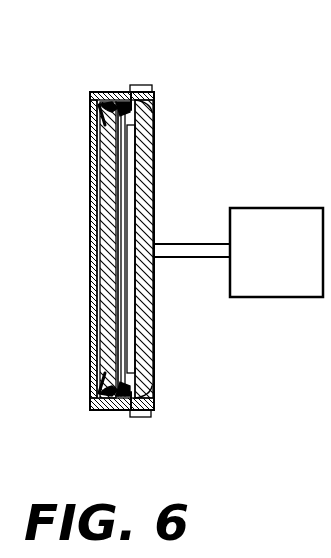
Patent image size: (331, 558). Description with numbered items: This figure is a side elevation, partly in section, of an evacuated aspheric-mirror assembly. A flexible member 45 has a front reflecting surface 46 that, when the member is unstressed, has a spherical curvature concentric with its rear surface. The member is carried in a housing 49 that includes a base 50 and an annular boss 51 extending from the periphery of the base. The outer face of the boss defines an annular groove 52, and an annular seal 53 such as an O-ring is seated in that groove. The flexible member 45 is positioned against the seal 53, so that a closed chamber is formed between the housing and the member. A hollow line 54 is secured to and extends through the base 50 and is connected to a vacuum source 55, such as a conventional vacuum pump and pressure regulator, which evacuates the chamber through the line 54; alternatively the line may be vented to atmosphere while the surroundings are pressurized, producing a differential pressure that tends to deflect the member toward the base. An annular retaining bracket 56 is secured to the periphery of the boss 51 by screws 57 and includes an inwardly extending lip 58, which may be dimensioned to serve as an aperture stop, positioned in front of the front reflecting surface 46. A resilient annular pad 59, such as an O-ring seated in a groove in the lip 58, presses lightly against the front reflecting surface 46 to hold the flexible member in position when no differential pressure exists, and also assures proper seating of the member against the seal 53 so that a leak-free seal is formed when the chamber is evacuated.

The flexible member 45 is at (90, 292).
The front reflecting surface 46 is at (100, 238).
The housing 49 is at (155, 345).
The base 50 is at (155, 160).
The annular boss 51 is at (131, 90).
The annular groove 52 is at (155, 103).
The annular seal 53 is at (110, 96).
The hollow line 54 is at (190, 243).
The vacuum source 55 is at (270, 255).
The annular retaining bracket 56 is at (93, 97).
The screws 57 is at (142, 88).
The inwardly extending lip 58 is at (92, 104).
The annular pad 59 is at (92, 134).